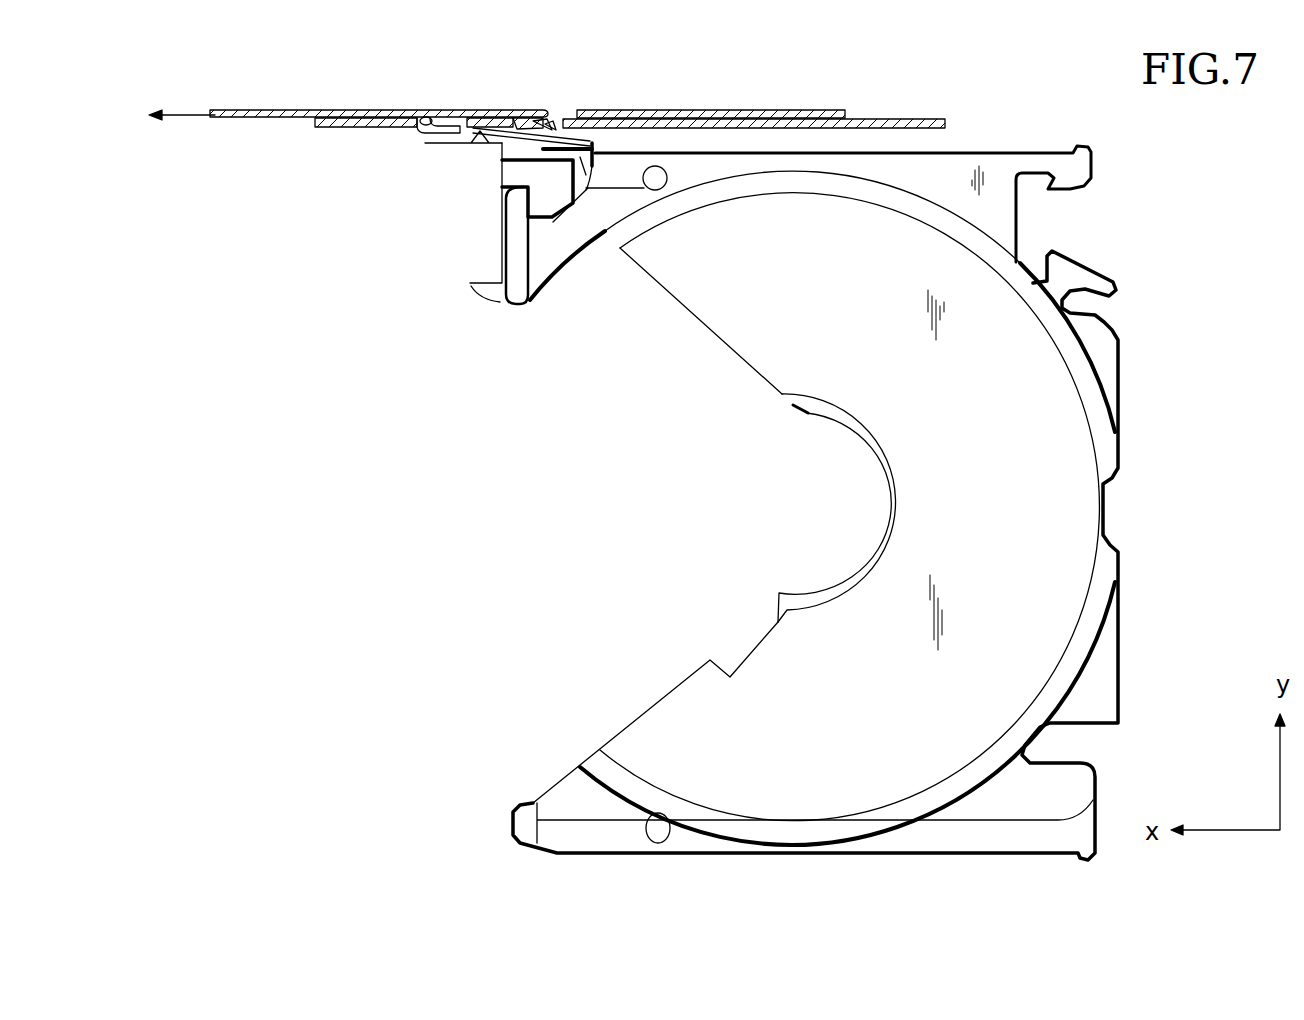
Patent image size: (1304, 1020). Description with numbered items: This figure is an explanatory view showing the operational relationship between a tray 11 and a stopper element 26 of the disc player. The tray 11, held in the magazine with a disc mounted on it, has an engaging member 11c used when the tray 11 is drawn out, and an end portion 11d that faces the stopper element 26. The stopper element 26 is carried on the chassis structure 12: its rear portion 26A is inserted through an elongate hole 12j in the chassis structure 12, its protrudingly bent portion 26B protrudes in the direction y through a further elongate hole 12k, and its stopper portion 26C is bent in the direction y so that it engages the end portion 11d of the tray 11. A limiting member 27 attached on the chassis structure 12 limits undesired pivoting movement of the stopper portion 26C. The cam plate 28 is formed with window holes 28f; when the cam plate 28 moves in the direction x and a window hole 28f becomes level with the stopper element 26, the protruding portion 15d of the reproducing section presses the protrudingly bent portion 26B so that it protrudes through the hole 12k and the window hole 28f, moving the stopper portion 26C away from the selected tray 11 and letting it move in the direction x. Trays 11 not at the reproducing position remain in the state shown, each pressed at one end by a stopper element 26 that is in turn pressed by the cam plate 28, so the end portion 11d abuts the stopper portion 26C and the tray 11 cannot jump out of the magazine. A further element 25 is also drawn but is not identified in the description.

The tray 11 is at (887, 362).
The engaging member 11c is at (537, 226).
The end portion 11d is at (593, 163).
The chassis structure 12 is at (345, 130).
The elongate hole 12j is at (468, 114).
The elongate hole 12k is at (518, 121).
The protruding portion 15d is at (473, 137).
The holder 25 is at (500, 178).
The stopper element 26 is at (462, 164).
The rear portion 26A is at (432, 113).
The protrudingly bent portion 26B is at (553, 121).
The stopper portion 26C is at (591, 146).
The limiting member 27 is at (580, 157).
The cam plate 28 is at (284, 108).
The window hole 28f is at (552, 117).